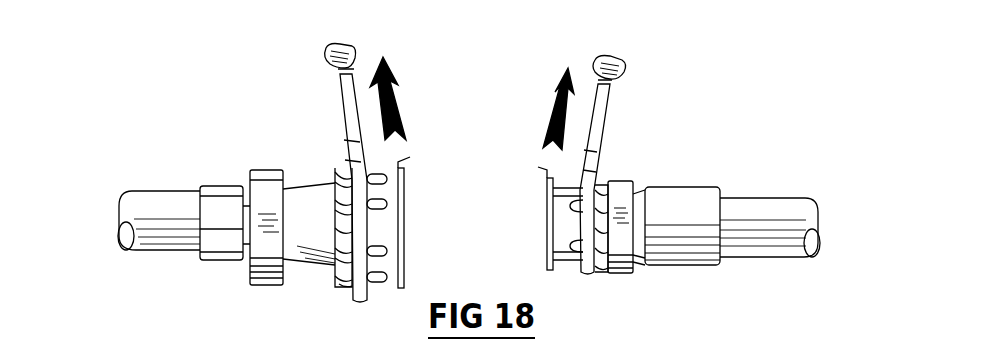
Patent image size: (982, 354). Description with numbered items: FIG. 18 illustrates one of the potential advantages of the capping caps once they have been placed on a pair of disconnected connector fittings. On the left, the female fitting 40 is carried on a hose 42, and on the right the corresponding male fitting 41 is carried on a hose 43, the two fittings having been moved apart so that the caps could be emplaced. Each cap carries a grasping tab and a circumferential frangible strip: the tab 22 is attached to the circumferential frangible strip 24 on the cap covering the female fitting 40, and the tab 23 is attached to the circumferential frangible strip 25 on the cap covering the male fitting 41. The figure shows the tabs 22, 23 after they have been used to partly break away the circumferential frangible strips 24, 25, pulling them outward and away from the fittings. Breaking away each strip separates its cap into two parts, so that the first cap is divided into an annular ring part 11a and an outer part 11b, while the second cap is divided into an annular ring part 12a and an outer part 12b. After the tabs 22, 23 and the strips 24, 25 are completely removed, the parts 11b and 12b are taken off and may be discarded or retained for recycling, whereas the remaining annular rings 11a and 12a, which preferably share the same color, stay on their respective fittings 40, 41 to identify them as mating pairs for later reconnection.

The cap part 11a is at (344, 286).
The cap part 11b is at (404, 228).
The cap part 12a is at (600, 185).
The cap part 12b is at (563, 255).
The tab 22 is at (326, 62).
The tab 23 is at (628, 72).
The circumferential frangible strip 24 is at (340, 125).
The circumferential frangible strip 25 is at (607, 105).
The female fitting 40 is at (316, 168).
The male fitting 41 is at (627, 279).
The hose 42 is at (140, 191).
The hose 43 is at (770, 198).